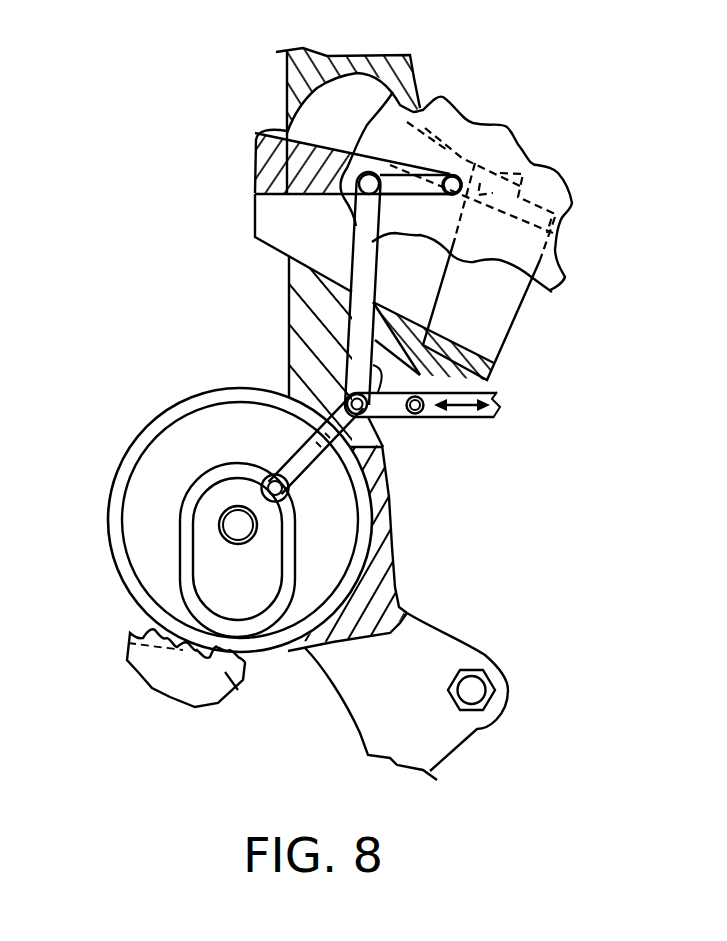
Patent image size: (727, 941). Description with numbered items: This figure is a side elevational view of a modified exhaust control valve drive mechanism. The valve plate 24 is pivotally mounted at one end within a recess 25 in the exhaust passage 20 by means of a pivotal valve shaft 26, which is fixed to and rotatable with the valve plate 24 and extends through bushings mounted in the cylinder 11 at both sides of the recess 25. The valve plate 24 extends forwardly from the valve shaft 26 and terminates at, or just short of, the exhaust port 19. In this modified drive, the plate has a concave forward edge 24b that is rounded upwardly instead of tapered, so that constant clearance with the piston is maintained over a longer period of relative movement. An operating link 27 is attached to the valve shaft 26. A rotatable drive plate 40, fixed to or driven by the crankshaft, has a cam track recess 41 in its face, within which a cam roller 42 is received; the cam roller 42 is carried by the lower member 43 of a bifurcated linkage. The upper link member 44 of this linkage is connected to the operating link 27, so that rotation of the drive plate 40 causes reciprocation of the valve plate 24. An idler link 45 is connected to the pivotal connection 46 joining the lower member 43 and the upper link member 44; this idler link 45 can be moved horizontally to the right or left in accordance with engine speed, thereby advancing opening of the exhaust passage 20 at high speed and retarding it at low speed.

The cylinder 11 is at (297, 63).
The recess 25 is at (343, 105).
The valve plate 24 is at (425, 123).
The concave forward edge 24b is at (257, 152).
The operating link 27 is at (458, 178).
The valve shaft 26 is at (463, 188).
The exhaust port 19 is at (260, 237).
The exhaust passage 20 is at (493, 322).
The upper link member 44 is at (366, 275).
The idler link 45 is at (393, 409).
The pivotal connection 46 is at (381, 418).
The lower member 43 is at (298, 452).
The cam roller 42 is at (290, 497).
The drive plate 40 is at (330, 556).
The cam track recess 41 is at (190, 557).